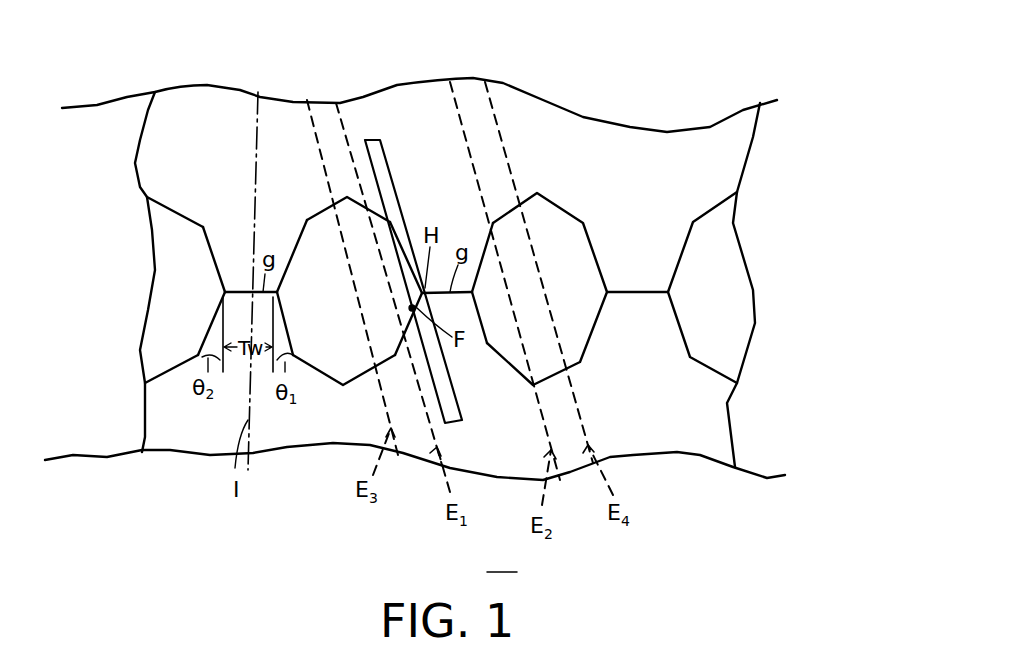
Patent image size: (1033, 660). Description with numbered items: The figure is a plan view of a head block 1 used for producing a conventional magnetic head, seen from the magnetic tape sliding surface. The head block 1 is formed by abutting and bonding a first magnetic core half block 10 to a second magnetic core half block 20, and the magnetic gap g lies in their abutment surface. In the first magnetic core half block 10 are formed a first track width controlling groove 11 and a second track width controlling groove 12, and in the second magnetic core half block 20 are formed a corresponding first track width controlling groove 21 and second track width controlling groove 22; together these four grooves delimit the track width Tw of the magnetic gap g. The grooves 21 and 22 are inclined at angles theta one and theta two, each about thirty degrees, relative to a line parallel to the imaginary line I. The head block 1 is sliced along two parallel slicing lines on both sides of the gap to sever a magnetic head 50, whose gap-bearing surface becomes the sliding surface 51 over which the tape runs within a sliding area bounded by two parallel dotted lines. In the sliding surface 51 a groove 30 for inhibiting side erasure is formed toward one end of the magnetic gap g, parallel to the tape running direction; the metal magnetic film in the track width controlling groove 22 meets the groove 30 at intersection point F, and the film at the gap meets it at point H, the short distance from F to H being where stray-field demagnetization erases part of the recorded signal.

The head block 1 is at (722, 97).
The first magnetic core half block 10 is at (667, 153).
The first track width controlling groove 11 is at (298, 256).
The second track width controlling groove 12 is at (210, 259).
The second magnetic core half block 20 is at (700, 445).
The first track width controlling groove 21 is at (297, 350).
The second track width controlling groove 22 is at (208, 331).
The groove for inhibiting side erasure 30 is at (380, 148).
The magnetic head 50 is at (498, 470).
The sliding surface 51 is at (442, 87).